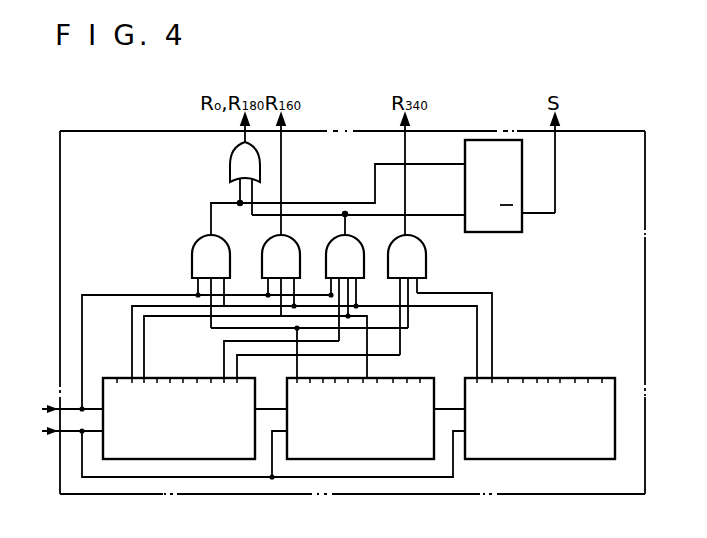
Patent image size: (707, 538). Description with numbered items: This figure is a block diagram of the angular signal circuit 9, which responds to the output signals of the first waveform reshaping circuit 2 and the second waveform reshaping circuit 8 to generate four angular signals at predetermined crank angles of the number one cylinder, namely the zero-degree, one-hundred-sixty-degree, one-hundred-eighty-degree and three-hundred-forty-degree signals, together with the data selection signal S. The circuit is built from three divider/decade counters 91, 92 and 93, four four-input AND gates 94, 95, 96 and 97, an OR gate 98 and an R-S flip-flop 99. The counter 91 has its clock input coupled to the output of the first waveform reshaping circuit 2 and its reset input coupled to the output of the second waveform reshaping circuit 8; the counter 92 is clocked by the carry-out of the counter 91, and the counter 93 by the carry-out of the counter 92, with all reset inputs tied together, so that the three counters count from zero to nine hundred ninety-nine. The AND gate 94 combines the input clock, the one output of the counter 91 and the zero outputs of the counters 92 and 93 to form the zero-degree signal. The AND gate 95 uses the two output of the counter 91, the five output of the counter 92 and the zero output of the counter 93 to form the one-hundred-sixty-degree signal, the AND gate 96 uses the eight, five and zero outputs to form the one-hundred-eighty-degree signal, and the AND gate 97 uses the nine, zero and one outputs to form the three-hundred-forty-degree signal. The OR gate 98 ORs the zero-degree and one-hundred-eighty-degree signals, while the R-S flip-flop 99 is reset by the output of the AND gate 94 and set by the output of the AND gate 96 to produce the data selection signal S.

The first waveform reshaping circuit 2 is at (58, 413).
The second waveform reshaping circuit 8 is at (58, 437).
The angular signal circuit 9 is at (643, 183).
The divider/decade counter 91 is at (165, 459).
The divider/decade counter 92 is at (361, 459).
The divider/decade counter 93 is at (540, 459).
The four-input AND gate 94 is at (197, 242).
The four-input AND gate 95 is at (268, 242).
The four-input AND gate 96 is at (352, 242).
The four-input AND gate 97 is at (422, 245).
The OR gate 98 is at (230, 163).
The R-S flip-flop 99 is at (490, 140).